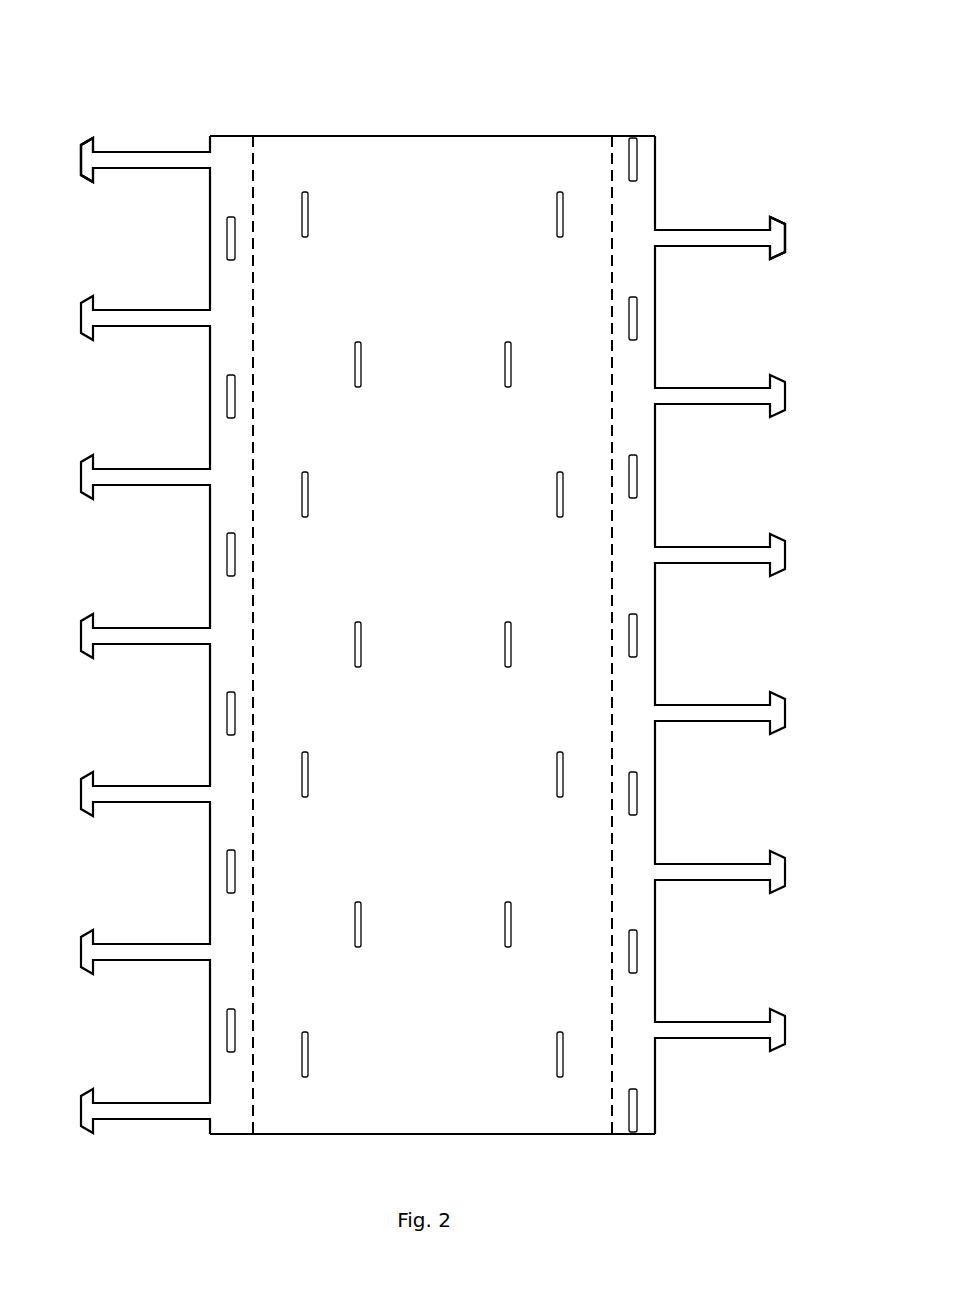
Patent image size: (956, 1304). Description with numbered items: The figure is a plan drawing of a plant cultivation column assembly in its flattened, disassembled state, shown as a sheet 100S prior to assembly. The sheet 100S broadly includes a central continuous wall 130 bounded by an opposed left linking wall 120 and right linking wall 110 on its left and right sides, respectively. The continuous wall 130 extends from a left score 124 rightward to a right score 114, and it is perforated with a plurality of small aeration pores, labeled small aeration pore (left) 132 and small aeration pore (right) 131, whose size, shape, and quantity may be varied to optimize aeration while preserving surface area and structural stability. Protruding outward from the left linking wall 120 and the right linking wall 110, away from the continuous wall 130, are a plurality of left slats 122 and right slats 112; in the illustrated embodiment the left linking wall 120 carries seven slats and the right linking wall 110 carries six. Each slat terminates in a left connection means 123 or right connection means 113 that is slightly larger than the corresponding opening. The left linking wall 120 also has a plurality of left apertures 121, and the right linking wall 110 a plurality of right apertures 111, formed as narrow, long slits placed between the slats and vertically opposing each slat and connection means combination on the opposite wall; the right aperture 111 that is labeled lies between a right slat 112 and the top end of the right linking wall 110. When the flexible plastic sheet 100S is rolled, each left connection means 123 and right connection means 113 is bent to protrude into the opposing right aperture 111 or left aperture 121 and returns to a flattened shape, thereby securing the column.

The sheet 100S is at (308, 106).
The right linking wall 110 is at (645, 203).
The right aperture 111 is at (629, 140).
The right slat 112 is at (725, 237).
The right connection means 113 is at (783, 228).
The right score 114 is at (612, 1135).
The left linking wall 120 is at (230, 181).
The left aperture 121 is at (227, 240).
The left slat 122 is at (133, 150).
The left connection means 123 is at (82, 146).
The left score 124 is at (253, 1135).
The continuous wall 130 is at (482, 160).
The small aeration pore (right) 131 is at (512, 355).
The small aeration pore (left) 132 is at (355, 360).